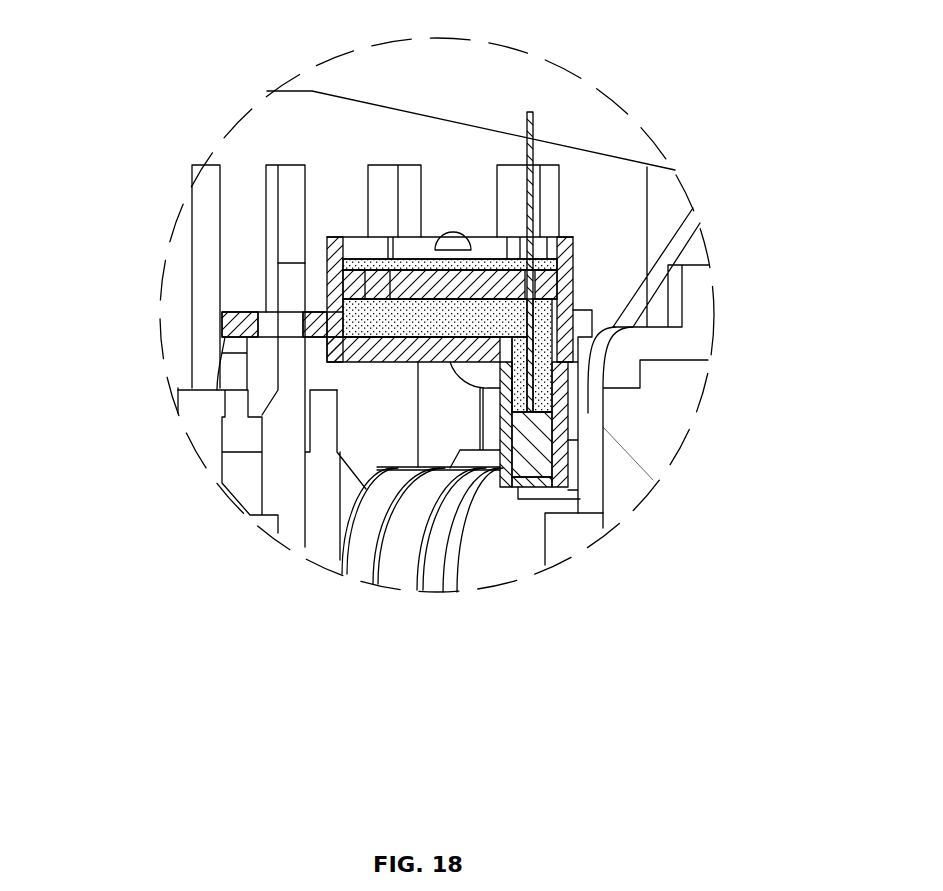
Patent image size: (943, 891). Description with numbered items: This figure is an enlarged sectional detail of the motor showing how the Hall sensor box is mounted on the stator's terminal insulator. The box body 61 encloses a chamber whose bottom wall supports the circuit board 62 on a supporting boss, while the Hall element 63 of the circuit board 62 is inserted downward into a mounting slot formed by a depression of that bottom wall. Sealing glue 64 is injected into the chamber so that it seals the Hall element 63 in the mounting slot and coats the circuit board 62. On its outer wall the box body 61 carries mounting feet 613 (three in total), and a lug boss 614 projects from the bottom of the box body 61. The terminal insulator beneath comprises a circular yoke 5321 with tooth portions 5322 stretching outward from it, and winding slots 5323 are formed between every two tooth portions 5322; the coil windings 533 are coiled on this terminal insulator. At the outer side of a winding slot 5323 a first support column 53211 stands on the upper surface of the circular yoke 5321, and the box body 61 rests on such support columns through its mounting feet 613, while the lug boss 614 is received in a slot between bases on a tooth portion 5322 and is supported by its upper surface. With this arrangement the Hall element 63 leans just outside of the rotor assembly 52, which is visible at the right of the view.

The box body 61 is at (333, 275).
The circuit board 62 is at (405, 283).
The Hall element 63 is at (533, 487).
The sealing glue 64 is at (543, 327).
The mounting feet 613 is at (233, 328).
The lug boss 614 is at (558, 442).
The rotor assembly 52 is at (642, 418).
The coil windings 533 is at (398, 533).
The circular yoke 5321 is at (278, 432).
The tooth portions 5322 is at (552, 503).
The winding slots 5323 is at (385, 430).
The first support column 53211 is at (290, 345).